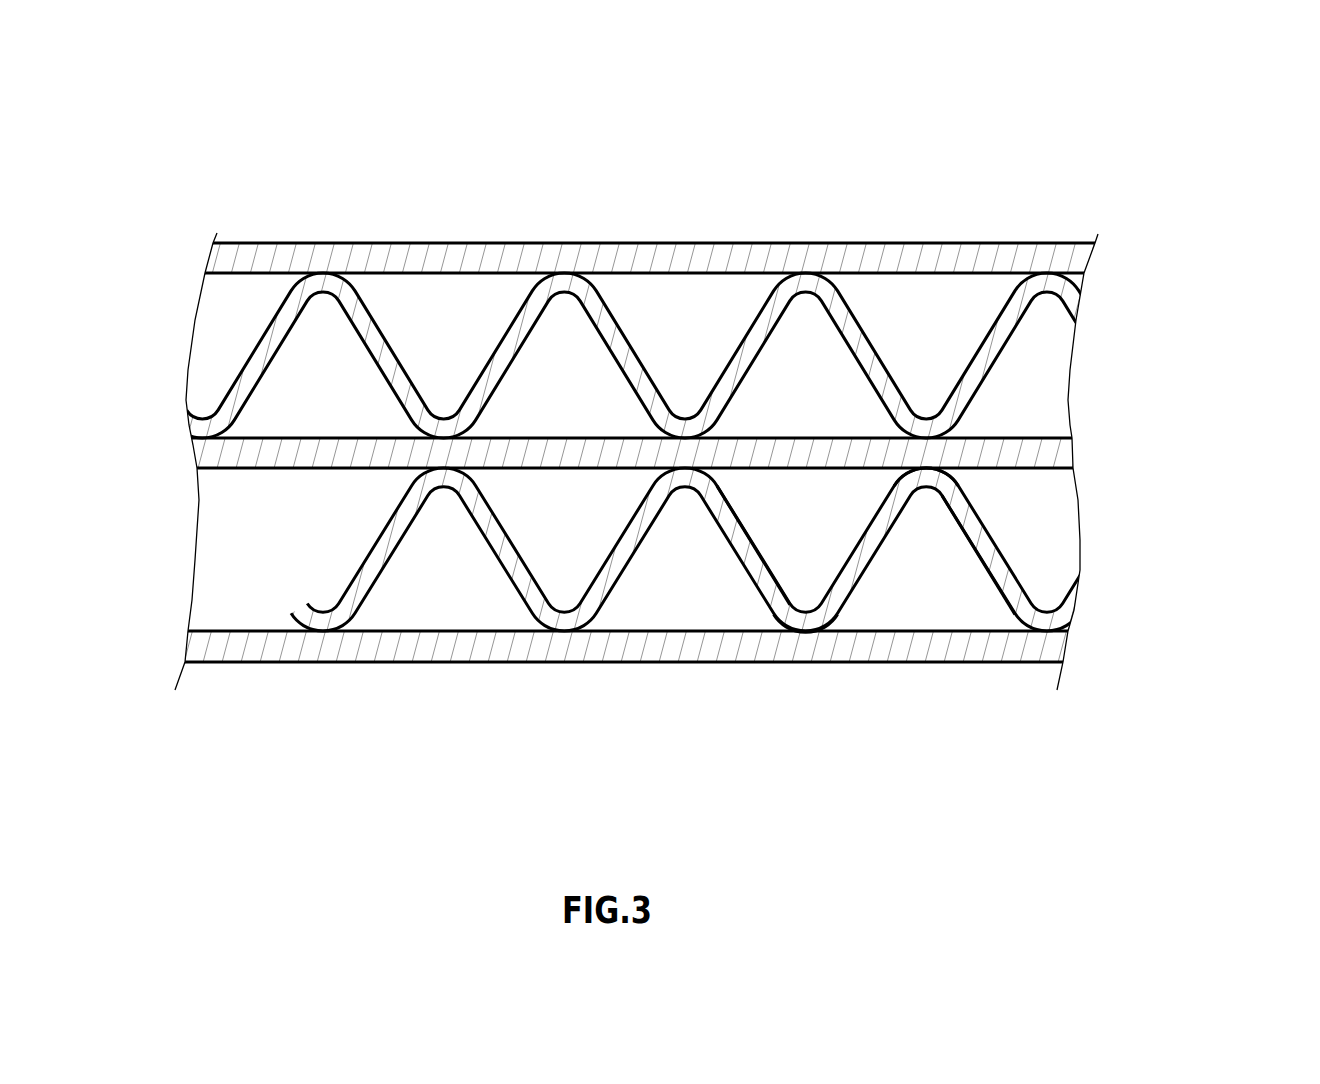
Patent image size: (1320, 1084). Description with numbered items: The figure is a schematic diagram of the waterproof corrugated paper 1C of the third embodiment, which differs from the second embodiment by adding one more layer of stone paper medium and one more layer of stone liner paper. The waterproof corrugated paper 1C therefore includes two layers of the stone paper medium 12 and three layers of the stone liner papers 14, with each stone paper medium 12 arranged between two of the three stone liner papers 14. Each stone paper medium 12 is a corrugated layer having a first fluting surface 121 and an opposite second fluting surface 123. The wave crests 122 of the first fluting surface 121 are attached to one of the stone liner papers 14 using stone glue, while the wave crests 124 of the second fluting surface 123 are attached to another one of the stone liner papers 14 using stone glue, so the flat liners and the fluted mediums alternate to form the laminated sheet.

The waterproof corrugated paper 1C is at (181, 210).
The stone paper medium 12 is at (390, 341).
The stone liner paper 14 is at (685, 260).
The first fluting surface 121 is at (730, 540).
The wave crests 122 is at (803, 633).
The second fluting surface 123 is at (1003, 553).
The wave crests 124 is at (950, 472).